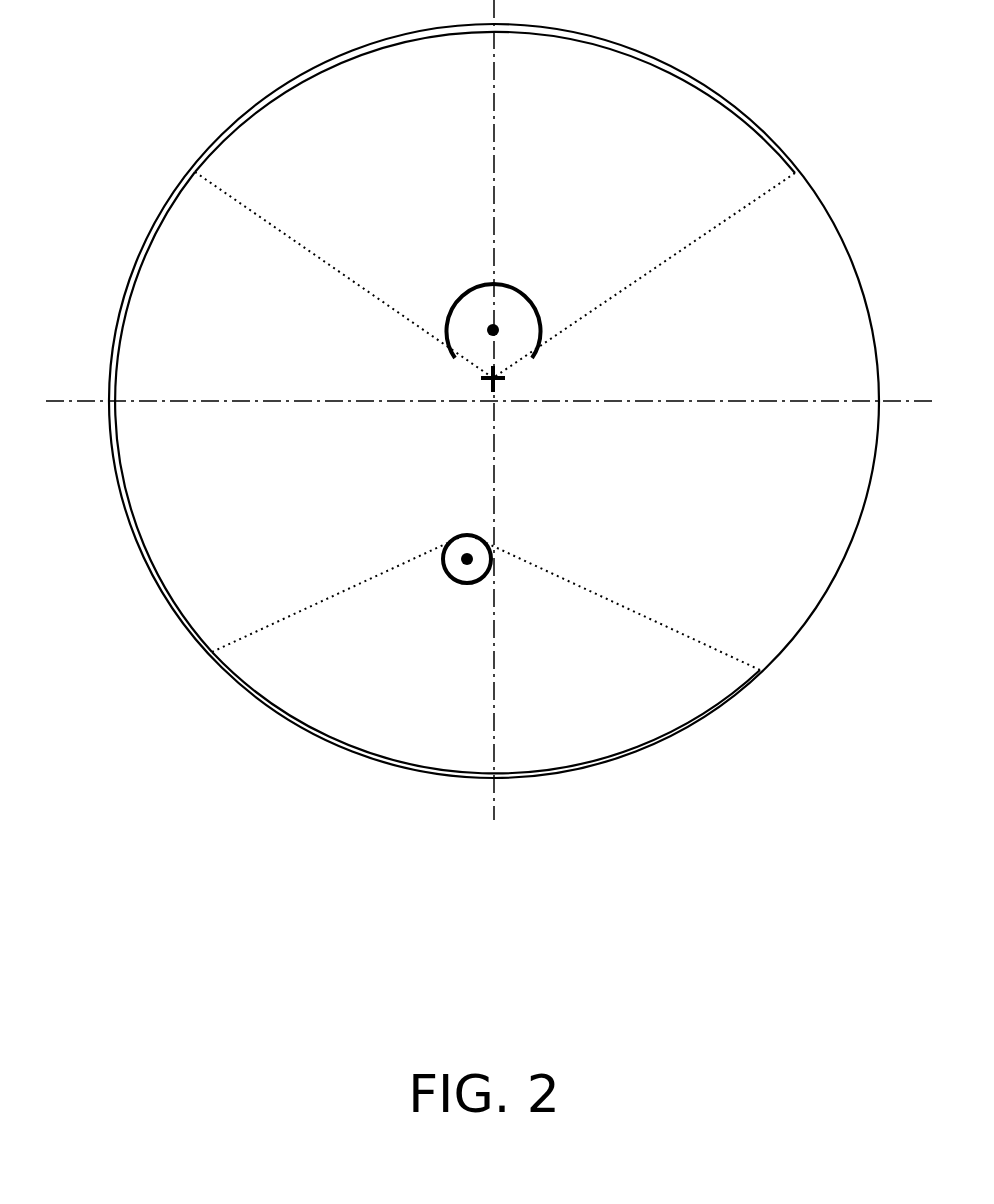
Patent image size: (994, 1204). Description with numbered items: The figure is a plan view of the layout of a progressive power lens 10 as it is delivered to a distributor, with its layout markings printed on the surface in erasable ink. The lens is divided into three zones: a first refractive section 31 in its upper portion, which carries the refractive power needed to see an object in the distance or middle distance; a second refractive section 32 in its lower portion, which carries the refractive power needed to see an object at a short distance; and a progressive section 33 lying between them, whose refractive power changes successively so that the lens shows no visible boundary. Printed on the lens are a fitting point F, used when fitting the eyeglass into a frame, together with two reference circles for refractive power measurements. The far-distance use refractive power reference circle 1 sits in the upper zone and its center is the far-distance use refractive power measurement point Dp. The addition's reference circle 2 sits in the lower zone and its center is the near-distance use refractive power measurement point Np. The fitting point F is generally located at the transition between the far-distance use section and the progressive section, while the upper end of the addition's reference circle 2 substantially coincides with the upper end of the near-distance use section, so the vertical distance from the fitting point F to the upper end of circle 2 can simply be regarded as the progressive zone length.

The progressive power lens 10 is at (778, 143).
The first refractive section 31 is at (293, 115).
The second refractive section 32 is at (315, 705).
The progressive section 33 is at (147, 326).
The far-distance use refractive power reference circle 1 is at (519, 288).
The addition's reference circle 2 is at (444, 545).
The far-distance use refractive power measurement point Dp is at (499, 330).
The near-distance use refractive power measurement point Np is at (470, 566).
The fitting point F is at (490, 395).